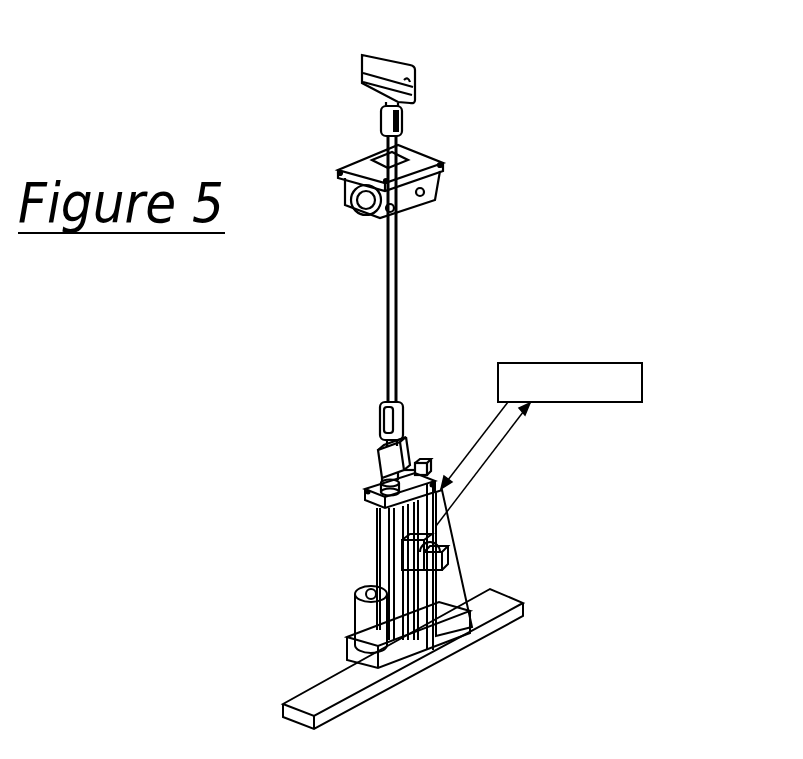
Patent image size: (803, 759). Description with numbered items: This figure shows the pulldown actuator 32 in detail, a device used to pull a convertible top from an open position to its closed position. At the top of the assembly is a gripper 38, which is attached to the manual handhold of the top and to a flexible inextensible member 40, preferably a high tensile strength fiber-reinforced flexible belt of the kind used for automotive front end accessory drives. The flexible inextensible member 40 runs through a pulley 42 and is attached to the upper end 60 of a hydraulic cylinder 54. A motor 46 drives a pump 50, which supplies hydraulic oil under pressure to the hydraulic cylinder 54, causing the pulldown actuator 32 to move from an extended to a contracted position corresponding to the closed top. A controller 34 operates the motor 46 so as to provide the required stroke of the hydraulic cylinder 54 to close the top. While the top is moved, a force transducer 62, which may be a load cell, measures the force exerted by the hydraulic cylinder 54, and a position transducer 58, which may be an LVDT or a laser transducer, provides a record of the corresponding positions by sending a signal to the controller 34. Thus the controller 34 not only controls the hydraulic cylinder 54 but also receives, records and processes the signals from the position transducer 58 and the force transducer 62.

The pulldown actuator 32 is at (536, 561).
The controller 34 is at (644, 362).
The gripper 38 is at (378, 56).
The flexible inextensible member 40 is at (397, 281).
The pulley 42 is at (362, 216).
The motor 46 is at (363, 612).
The pump 50 is at (350, 650).
The hydraulic cylinder 54 is at (378, 522).
The position transducer 58 is at (438, 516).
The upper end 60 is at (382, 410).
The force transducer 62 is at (380, 458).